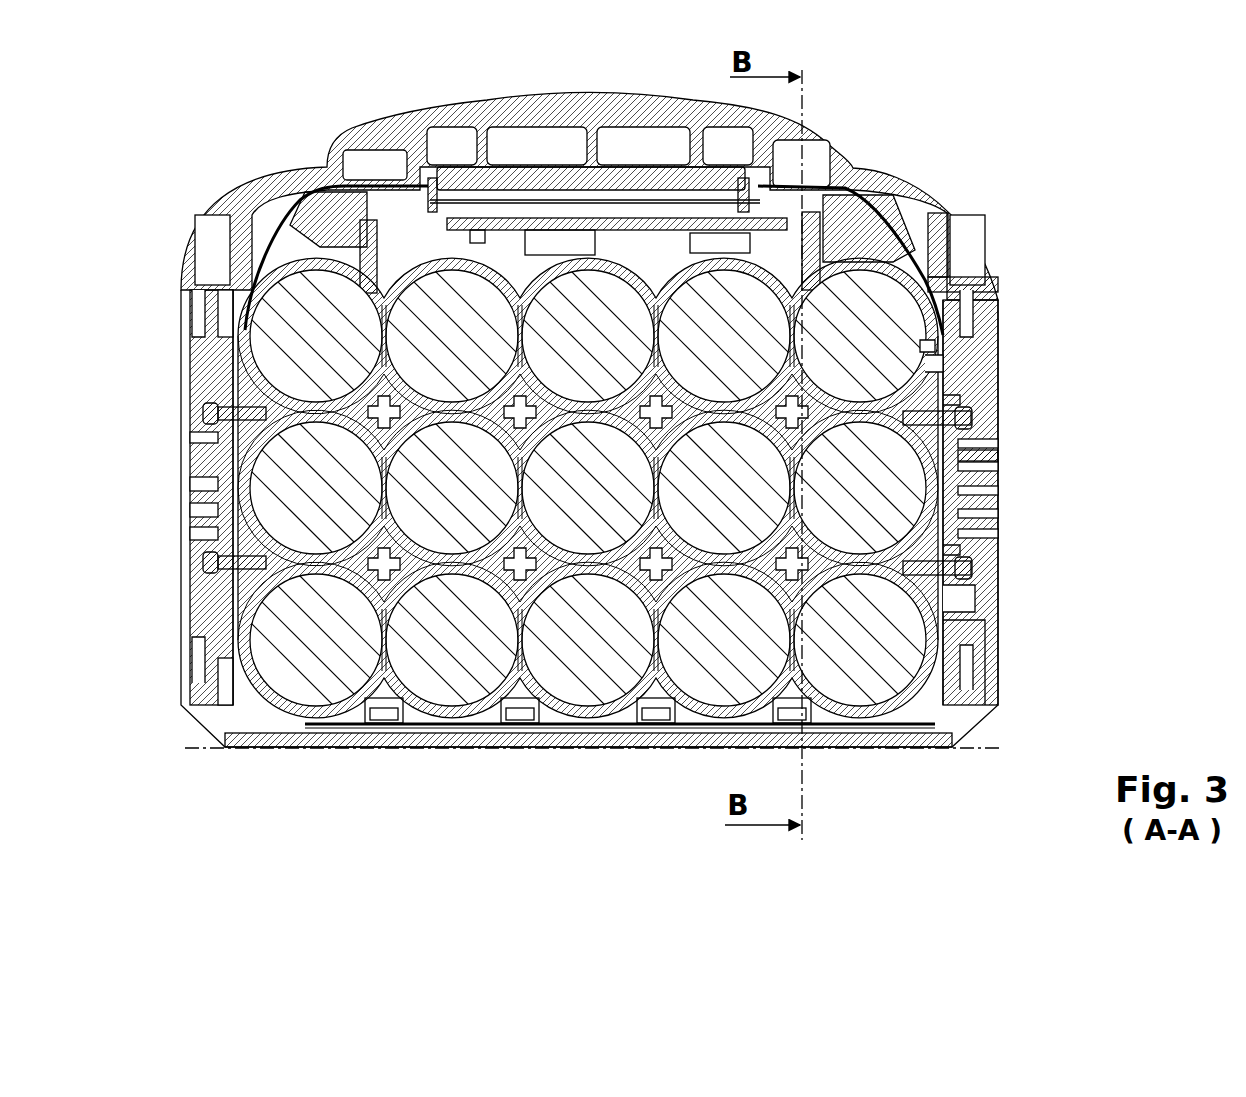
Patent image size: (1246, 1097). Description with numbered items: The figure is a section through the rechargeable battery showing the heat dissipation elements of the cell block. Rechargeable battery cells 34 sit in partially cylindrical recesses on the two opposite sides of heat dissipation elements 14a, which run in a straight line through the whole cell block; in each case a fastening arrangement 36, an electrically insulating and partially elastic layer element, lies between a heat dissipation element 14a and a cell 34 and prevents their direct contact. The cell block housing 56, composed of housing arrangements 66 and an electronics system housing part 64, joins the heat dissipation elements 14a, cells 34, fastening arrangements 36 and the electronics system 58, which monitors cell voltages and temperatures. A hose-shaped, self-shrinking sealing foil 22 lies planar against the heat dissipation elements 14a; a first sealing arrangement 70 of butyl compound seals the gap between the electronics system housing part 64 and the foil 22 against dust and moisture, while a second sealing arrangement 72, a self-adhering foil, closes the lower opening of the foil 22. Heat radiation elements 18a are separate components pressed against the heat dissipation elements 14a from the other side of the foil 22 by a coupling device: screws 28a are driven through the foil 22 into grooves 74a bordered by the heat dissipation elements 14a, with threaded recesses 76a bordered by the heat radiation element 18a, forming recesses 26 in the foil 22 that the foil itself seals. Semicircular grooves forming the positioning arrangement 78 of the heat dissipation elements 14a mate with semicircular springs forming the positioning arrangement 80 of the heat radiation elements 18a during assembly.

The heat dissipation element 14a is at (957, 416).
The heat radiation element 18a is at (222, 330).
The sealing foil 22 is at (952, 630).
The recess 26 is at (962, 600).
The screw 28a is at (956, 432).
The rechargeable battery cell 34 is at (902, 325).
The fastening arrangement 36 is at (218, 345).
The cell block housing 56 is at (903, 237).
The electronics system 58 is at (553, 226).
The electronics system housing part 64 is at (843, 225).
The housing arrangement 66 is at (290, 270).
The first sealing arrangement 70 is at (431, 210).
The second sealing arrangement 72 is at (650, 735).
The groove 74a is at (962, 481).
The threaded recess 76a is at (962, 456).
The positioning arrangement of heat dissipation elements 78 is at (928, 345).
The positioning arrangement of heat radiation elements 80 is at (934, 365).